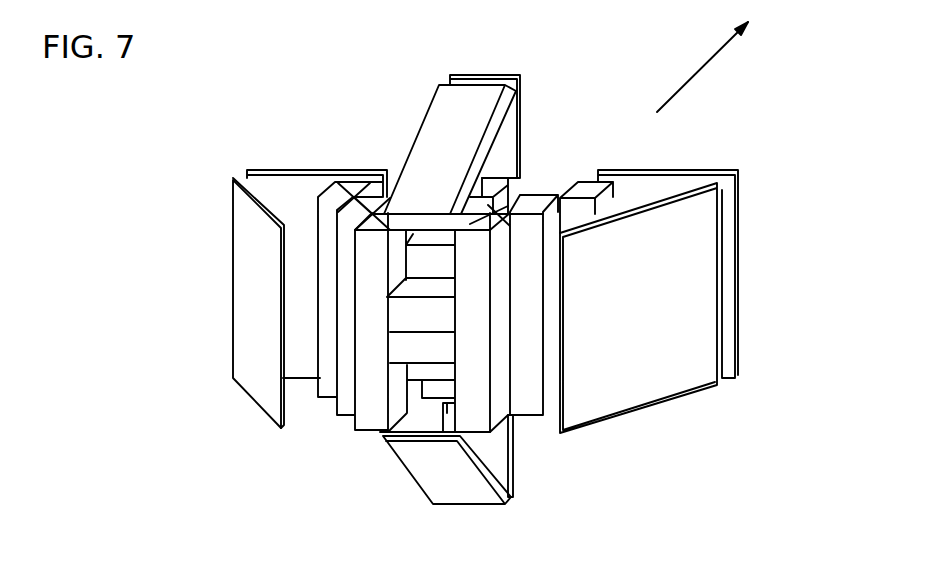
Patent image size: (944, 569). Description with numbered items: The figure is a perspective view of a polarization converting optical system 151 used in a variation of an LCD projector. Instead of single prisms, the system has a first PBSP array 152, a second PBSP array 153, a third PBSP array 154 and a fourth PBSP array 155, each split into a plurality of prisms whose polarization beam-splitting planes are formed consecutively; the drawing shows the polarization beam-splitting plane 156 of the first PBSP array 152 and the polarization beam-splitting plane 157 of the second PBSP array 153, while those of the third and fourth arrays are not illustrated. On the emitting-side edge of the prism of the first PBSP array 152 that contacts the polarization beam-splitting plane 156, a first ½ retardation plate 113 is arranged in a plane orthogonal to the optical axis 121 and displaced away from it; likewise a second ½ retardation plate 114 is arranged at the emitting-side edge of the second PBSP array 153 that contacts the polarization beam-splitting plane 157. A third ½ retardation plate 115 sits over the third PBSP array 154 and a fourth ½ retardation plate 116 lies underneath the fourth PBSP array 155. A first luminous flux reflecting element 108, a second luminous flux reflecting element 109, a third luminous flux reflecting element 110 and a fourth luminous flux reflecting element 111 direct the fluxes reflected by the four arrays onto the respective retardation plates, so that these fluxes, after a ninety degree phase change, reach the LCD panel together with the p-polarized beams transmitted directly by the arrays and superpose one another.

The first luminous flux reflecting element 108 is at (209, 332).
The second luminous flux reflecting element 109 is at (660, 400).
The third luminous flux reflecting element 110 is at (433, 92).
The fourth luminous flux reflecting element 111 is at (485, 507).
The first ½ retardation plate 113 is at (273, 170).
The second ½ retardation plate 114 is at (742, 228).
The third ½ retardation plate 115 is at (523, 88).
The fourth ½ retardation plate 116 is at (518, 463).
The optical axis 121 is at (683, 85).
The polarization converting optical system 151 is at (238, 407).
The first PBSP array 152 is at (363, 270).
The second PBSP array 153 is at (498, 360).
The third PBSP array 154 is at (512, 195).
The fourth PBSP array 155 is at (387, 348).
The polarization beam-splitting plane 156 is at (352, 188).
The polarization beam-splitting plane 157 is at (588, 180).